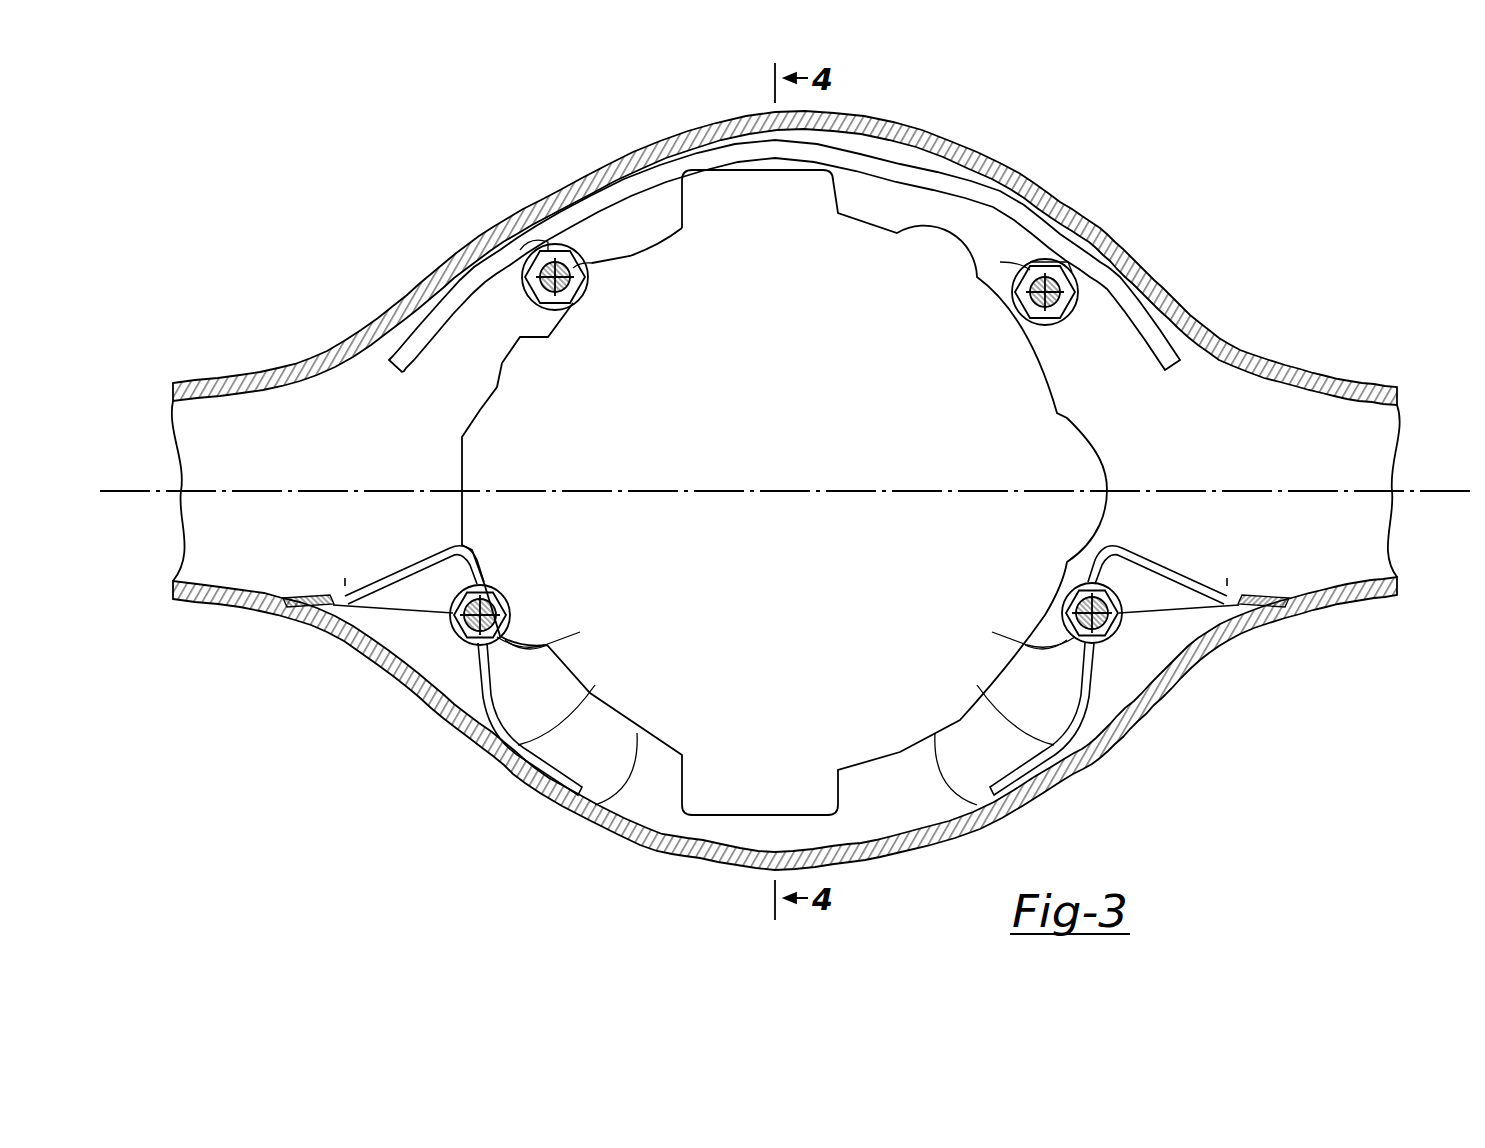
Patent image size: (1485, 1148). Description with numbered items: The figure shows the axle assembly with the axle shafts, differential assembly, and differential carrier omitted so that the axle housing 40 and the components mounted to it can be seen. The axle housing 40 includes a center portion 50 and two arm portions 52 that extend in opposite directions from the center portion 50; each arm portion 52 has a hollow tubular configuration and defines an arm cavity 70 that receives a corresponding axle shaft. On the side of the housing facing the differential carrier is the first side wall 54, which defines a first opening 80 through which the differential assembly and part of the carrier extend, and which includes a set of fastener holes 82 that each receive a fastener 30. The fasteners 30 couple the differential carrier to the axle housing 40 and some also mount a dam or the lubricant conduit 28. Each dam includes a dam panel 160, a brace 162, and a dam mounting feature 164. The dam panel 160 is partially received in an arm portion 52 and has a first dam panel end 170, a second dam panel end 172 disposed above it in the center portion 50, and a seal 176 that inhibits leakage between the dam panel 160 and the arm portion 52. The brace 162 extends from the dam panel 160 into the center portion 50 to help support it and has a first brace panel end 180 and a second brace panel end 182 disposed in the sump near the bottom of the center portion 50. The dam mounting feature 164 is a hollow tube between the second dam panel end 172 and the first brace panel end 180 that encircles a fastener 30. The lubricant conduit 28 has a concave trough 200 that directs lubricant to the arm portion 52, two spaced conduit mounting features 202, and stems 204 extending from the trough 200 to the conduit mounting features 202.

The lubricant conduit 28 is at (784, 219).
The trough 200 is at (784, 256).
The first side wall 54 is at (940, 217).
The axle housing 40 is at (785, 468).
The center portion 50 is at (660, 133).
The arm portion 52 is at (210, 380).
The arm cavity 70 is at (238, 463).
The first opening 80 is at (785, 451).
The fastener holes 82 is at (785, 493).
The fasteners 30 is at (568, 288).
The dam panel 160 is at (403, 573).
The brace 162 is at (590, 693).
The dam mounting feature 164 is at (520, 618).
The first dam panel end 170 is at (335, 606).
The second dam panel end 172 is at (487, 583).
The seal 176 is at (283, 595).
The first brace panel end 180 is at (547, 645).
The second brace panel end 182 is at (637, 733).
The conduit mounting feature 202 is at (592, 263).
The stem 204 is at (530, 248).